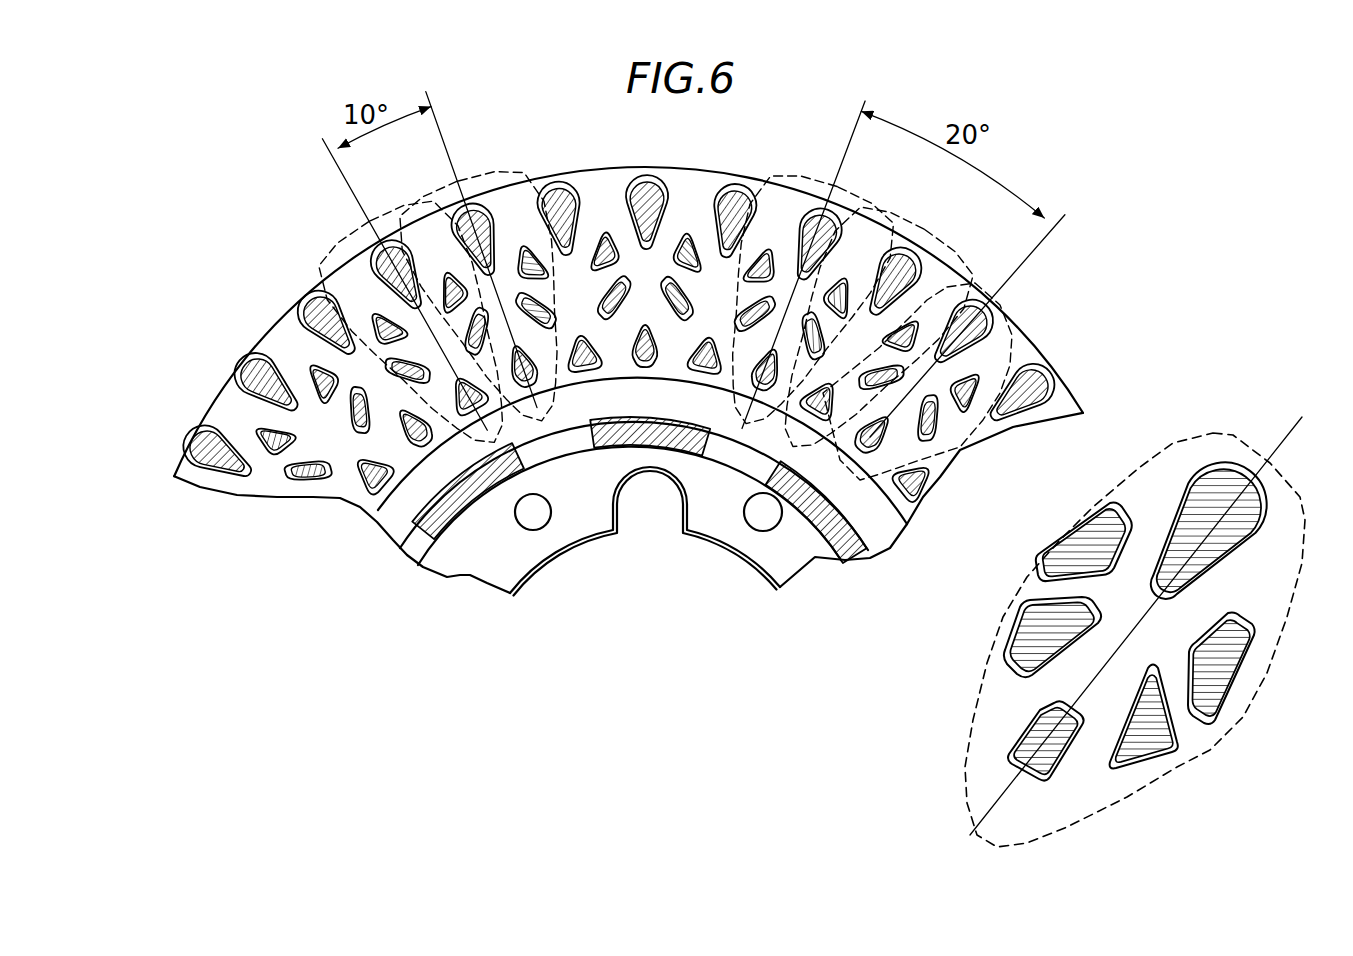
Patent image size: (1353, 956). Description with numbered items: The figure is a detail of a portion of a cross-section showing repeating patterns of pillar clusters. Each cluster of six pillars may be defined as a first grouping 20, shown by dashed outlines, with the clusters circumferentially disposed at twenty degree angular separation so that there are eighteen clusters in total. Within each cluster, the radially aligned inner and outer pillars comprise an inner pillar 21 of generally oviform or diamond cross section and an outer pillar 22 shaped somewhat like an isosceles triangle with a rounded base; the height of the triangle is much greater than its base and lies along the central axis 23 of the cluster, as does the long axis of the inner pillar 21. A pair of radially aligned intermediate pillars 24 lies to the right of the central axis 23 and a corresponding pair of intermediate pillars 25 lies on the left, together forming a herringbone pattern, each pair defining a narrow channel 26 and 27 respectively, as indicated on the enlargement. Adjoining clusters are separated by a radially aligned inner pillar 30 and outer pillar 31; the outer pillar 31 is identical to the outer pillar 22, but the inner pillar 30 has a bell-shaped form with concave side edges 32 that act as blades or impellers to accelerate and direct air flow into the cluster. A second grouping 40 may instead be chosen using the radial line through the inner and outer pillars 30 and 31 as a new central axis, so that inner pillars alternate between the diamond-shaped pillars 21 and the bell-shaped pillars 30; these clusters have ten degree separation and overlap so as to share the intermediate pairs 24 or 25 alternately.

The first grouping 20 is at (862, 202).
The inner pillar 21 is at (552, 378).
The outer pillar 22 is at (507, 202).
The central axis 23 is at (780, 462).
The intermediate pillars 24 is at (967, 430).
The intermediate pillars 25 is at (845, 355).
The narrow channel 26 is at (1186, 723).
The narrow channel 27 is at (1040, 586).
The inner pillar 30 is at (436, 440).
The outer pillar 31 is at (392, 266).
The concave side edges 32 is at (933, 480).
The second grouping 40 is at (405, 203).